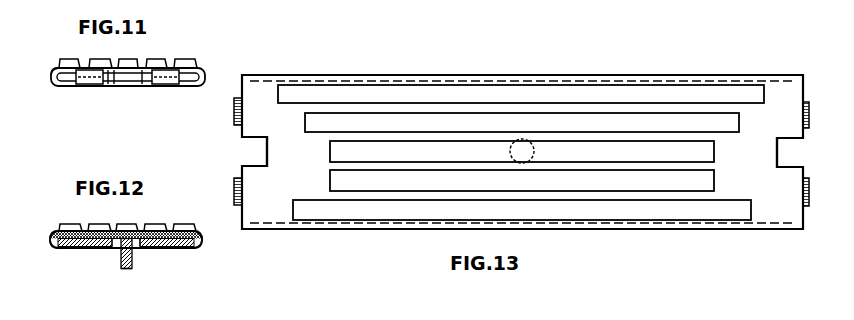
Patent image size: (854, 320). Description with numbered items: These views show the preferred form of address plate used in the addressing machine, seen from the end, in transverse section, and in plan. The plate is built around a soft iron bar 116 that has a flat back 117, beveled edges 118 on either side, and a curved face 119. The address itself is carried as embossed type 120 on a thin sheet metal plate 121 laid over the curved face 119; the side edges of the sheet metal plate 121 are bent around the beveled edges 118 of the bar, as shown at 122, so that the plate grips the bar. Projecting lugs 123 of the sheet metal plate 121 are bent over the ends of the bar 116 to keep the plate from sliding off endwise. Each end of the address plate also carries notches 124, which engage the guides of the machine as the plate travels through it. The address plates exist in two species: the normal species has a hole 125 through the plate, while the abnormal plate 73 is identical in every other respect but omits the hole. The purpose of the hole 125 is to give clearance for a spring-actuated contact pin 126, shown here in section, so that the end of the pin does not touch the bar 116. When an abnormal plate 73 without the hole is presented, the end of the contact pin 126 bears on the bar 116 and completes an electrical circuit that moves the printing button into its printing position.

In FIG. 13, the abnormal plate 73 is at (497, 89).
In FIG. 11, the soft iron bar 116 is at (146, 86).
In FIG. 12, the soft iron bar 116 is at (85, 243).
In FIG. 12, the flat back 117 is at (166, 243).
In FIG. 11, the beveled edges 118 is at (63, 83).
In FIG. 12, the beveled edges 118 is at (58, 247).
In FIG. 12, the curved face 119 is at (150, 248).
In FIG. 11, the embossed type 120 is at (158, 62).
In FIG. 12, the embossed type 120 is at (98, 225).
In FIG. 13, the embossed type 120 is at (521, 152).
In FIG. 11, the sheet metal plate 121 is at (109, 88).
In FIG. 12, the sheet metal plate 121 is at (171, 229).
In FIG. 12, the bent-over edges 122 is at (50, 233).
In FIG. 11, the projecting lugs 123 is at (200, 141).
In FIG. 13, the projecting lugs 123 is at (236, 113).
In FIG. 13, the notches 124 is at (522, 152).
In FIG. 12, the hole 125 is at (120, 250).
In FIG. 13, the hole 125 is at (534, 150).
In FIG. 12, the contact pin 126 is at (128, 270).